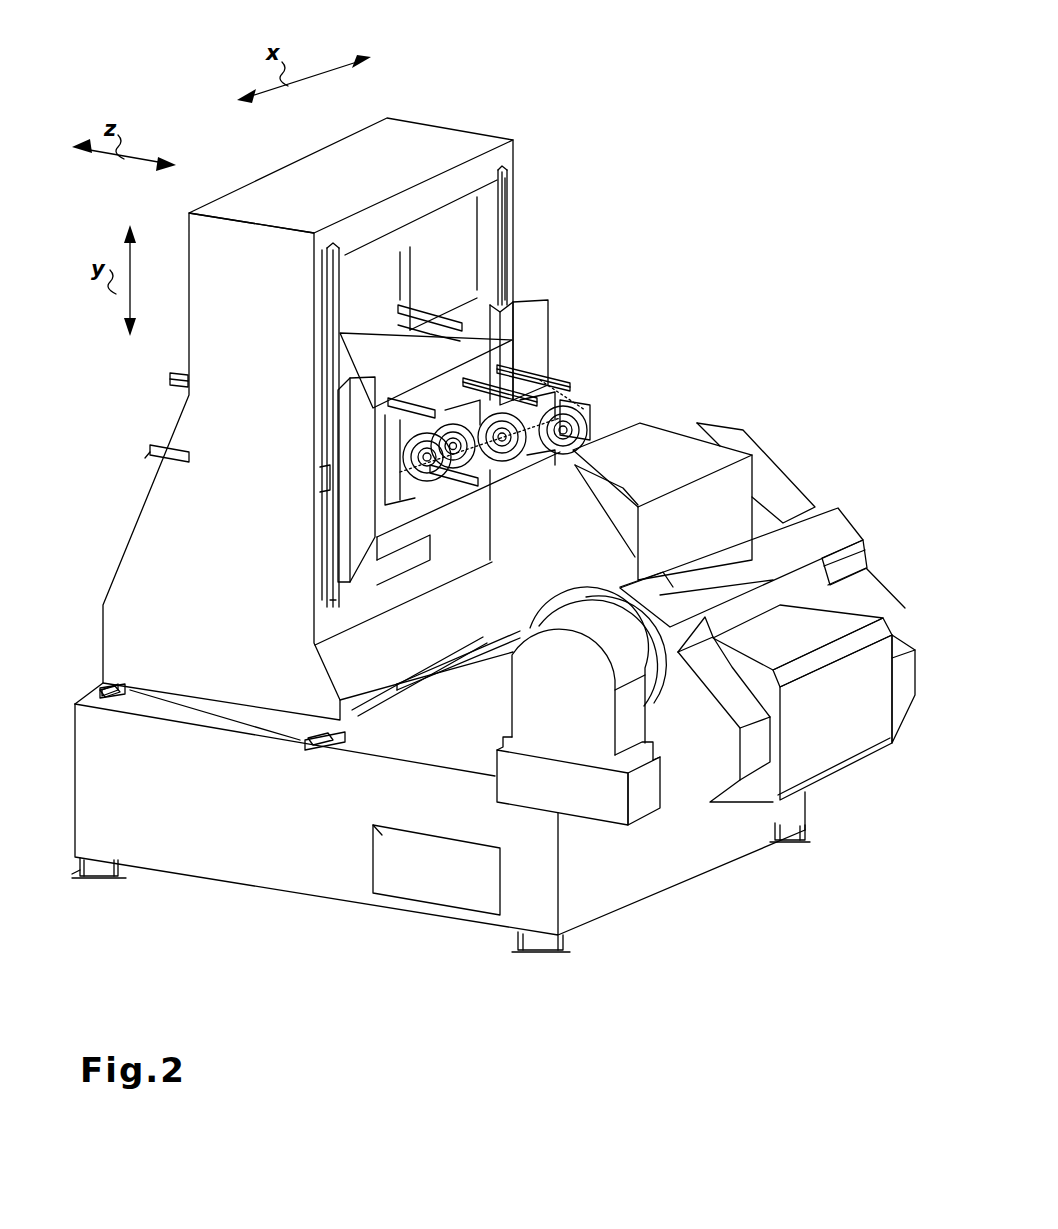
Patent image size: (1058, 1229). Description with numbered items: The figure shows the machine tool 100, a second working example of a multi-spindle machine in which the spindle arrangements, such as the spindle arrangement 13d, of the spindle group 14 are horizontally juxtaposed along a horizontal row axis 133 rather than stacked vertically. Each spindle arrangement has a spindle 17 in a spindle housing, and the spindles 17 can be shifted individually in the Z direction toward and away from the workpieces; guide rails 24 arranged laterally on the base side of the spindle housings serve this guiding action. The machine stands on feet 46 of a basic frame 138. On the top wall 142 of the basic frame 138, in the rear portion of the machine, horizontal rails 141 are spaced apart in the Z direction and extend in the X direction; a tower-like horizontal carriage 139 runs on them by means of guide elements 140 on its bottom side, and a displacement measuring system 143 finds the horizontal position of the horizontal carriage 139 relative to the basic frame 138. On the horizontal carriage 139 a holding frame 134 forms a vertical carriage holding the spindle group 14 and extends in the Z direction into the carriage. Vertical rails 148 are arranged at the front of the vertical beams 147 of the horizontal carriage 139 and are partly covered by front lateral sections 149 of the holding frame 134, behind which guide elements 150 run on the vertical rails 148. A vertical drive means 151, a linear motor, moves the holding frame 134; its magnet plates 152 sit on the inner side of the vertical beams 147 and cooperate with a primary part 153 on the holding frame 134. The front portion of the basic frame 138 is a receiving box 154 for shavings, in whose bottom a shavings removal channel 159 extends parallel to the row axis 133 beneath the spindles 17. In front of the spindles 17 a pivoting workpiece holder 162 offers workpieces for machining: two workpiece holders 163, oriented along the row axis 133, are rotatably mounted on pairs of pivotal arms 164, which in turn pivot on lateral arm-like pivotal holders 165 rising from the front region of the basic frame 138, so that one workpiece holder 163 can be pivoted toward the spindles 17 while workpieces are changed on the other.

The machine tool 100 is at (801, 61).
The basic frame 138 is at (215, 855).
The shavings removal channel 159 is at (431, 896).
The feet 46 is at (96, 881).
The top wall 142 is at (181, 706).
The horizontal carriage 139 is at (490, 151).
The vertical rails 148 is at (327, 288).
The vertical beams 147 is at (520, 194).
The guide elements 150 is at (328, 384).
The front lateral sections 149 is at (374, 560).
The holding frame 134 is at (534, 296).
The magnet plates 152 is at (418, 312).
The vertical drive means 151 is at (398, 326).
The primary part 153 is at (412, 322).
The guide rails 24 is at (168, 446).
The spindle arrangement 13d is at (588, 422).
The spindle group 14 is at (600, 390).
The row axis 133 is at (553, 393).
The spindle 17 is at (476, 486).
The displacement measuring system 143 is at (432, 678).
The guide elements 140 is at (138, 704).
The horizontal rails 141 is at (99, 689).
The receiving box 154 is at (428, 750).
The pivotal holders 165 is at (585, 818).
The pairs of pivotal arms 164 is at (566, 496).
The workpiece holders 163 is at (660, 434).
The pivoting workpiece holder 162 is at (854, 508).